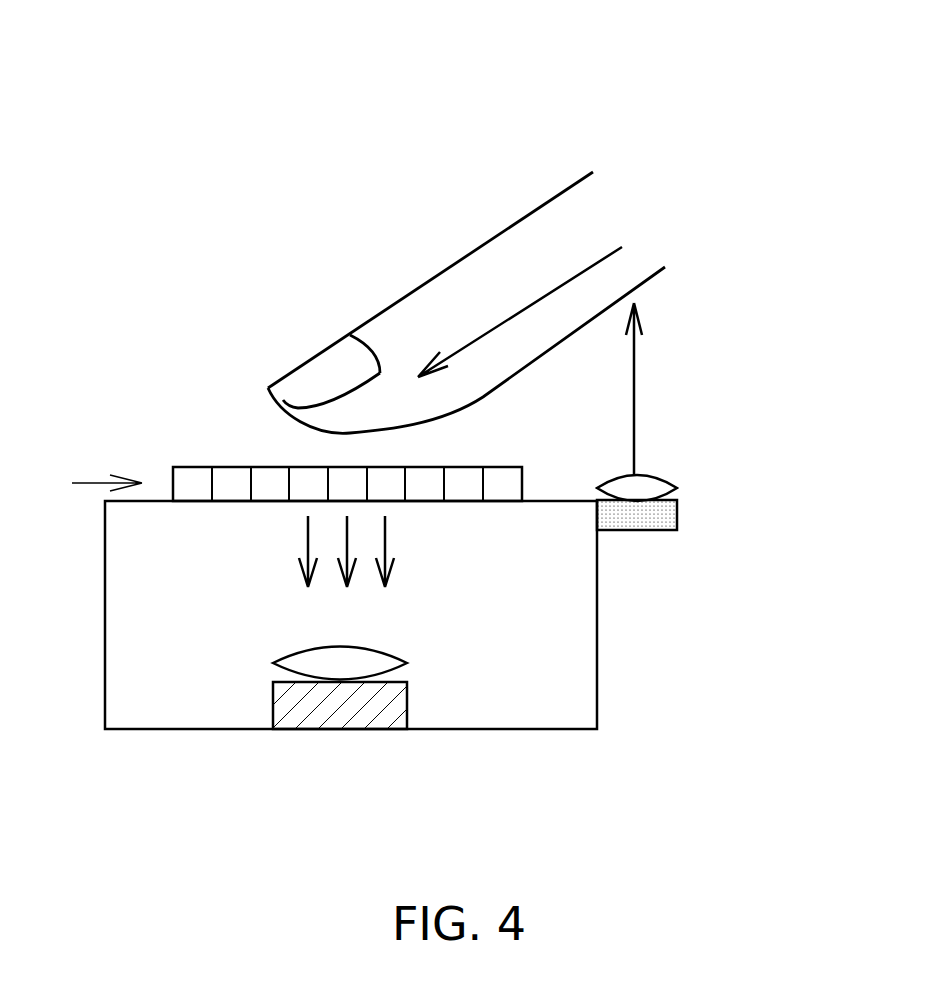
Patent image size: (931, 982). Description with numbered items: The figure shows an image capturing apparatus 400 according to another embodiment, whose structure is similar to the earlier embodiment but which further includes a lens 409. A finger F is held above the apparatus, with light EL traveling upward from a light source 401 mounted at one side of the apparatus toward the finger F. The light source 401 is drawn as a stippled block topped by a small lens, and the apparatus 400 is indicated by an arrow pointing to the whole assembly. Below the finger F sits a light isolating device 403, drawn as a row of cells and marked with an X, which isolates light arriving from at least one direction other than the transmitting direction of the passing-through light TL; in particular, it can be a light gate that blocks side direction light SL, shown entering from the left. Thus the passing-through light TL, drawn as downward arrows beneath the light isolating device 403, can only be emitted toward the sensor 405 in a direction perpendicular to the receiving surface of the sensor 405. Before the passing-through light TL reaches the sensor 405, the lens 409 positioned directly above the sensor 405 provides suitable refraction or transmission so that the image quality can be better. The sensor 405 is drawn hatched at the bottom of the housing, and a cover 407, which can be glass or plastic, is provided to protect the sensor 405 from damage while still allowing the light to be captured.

The image capturing apparatus 400 is at (690, 110).
The light source 401 is at (636, 532).
The light isolating device 403 is at (192, 465).
The sensor 405 is at (340, 730).
The cover 407 is at (528, 730).
The lens 409 is at (400, 653).
The finger F is at (430, 293).
The emitted light EL is at (652, 389).
The passing-through light TL is at (370, 551).
The side direction light SL is at (92, 470).
The X direction X is at (156, 486).